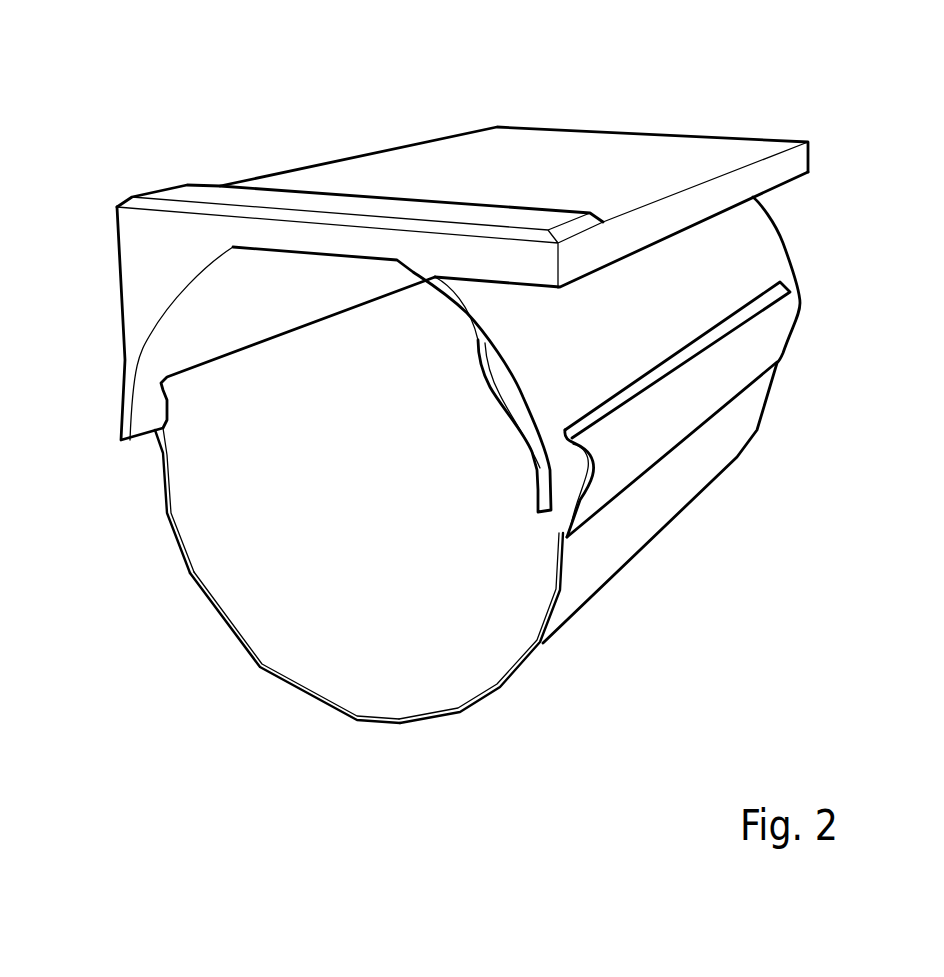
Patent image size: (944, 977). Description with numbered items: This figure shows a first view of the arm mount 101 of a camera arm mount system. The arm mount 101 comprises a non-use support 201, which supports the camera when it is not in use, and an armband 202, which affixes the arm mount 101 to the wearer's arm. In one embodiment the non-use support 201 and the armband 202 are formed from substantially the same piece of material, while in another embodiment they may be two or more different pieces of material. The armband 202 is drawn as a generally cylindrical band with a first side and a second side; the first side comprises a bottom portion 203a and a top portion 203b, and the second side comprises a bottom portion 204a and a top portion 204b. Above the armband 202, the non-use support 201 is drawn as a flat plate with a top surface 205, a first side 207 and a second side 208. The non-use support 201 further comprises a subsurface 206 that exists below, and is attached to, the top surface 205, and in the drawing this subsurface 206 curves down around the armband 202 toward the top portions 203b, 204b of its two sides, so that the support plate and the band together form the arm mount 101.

The arm mount 101 is at (423, 376).
The non-use support 201 is at (423, 385).
The armband 202 is at (342, 580).
The bottom portion 203a is at (507, 690).
The top portion 203b is at (590, 536).
The bottom portion 204a is at (268, 672).
The top portion 204b is at (168, 502).
The top surface 205 is at (497, 158).
The subsurface 206 is at (527, 360).
The first side 207 is at (635, 237).
The second side 208 is at (363, 152).